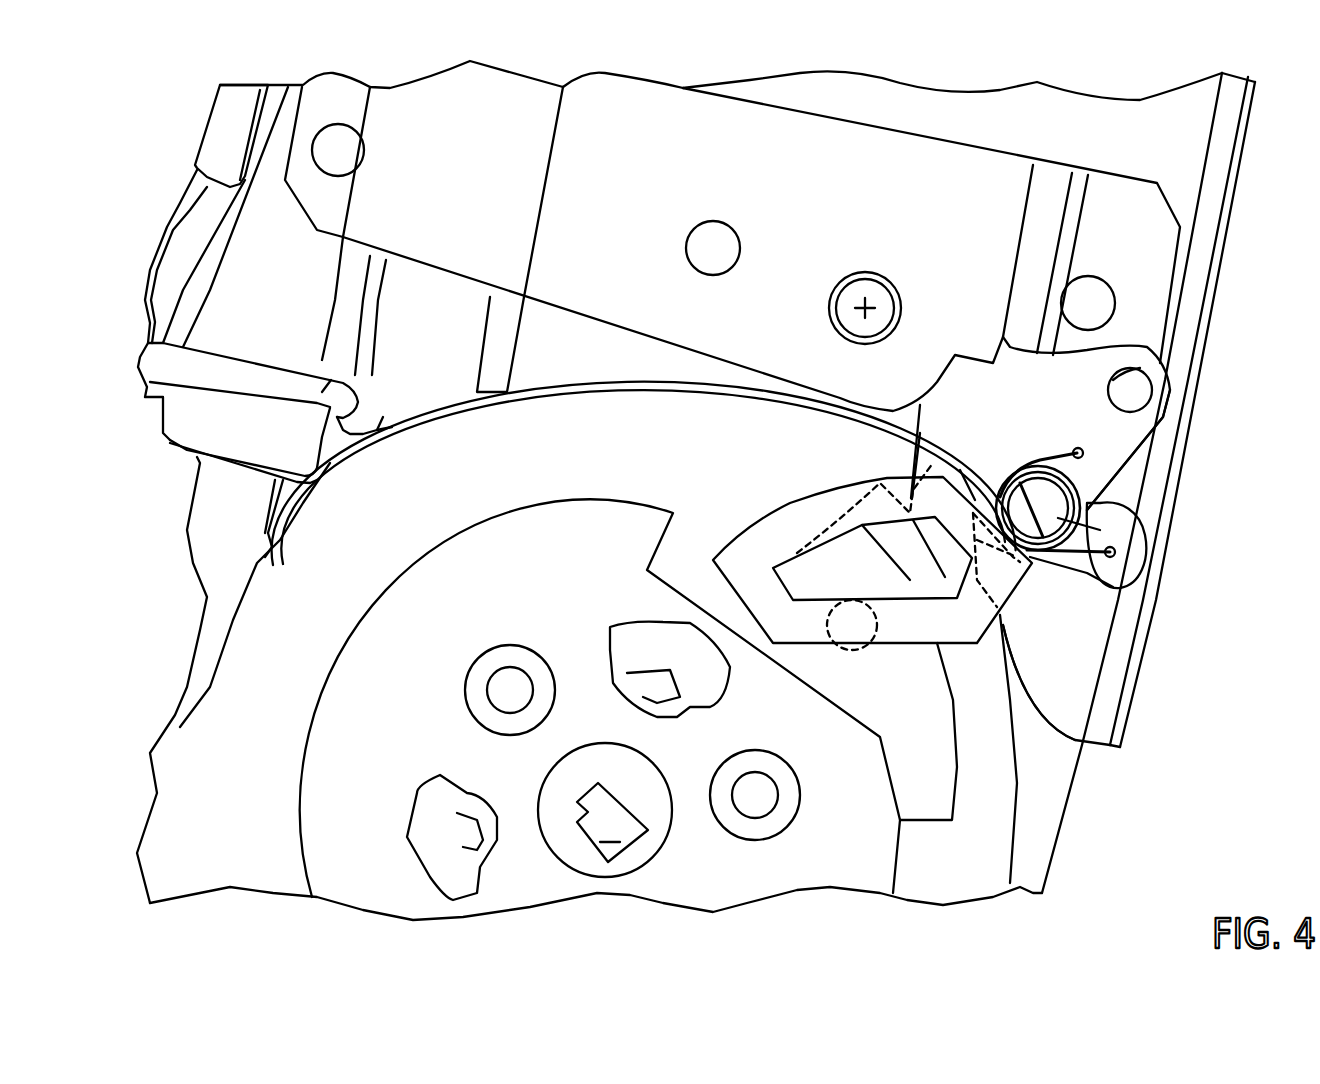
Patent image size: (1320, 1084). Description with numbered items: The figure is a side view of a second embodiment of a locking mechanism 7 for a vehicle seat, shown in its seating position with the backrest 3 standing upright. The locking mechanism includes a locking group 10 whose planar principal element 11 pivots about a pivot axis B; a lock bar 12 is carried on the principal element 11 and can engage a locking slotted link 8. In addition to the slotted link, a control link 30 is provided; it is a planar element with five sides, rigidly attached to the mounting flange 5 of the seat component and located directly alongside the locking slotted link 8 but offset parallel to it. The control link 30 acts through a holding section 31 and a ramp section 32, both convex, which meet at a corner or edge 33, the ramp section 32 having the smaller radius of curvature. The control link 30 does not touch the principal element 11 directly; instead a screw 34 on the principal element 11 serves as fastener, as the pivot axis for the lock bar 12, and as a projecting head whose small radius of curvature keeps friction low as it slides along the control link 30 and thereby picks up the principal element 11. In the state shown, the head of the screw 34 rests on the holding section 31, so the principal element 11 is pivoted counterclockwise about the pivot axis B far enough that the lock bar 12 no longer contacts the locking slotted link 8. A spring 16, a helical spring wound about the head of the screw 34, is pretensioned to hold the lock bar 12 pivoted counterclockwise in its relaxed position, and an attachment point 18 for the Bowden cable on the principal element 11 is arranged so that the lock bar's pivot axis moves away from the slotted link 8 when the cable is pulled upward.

The backrest 3 is at (263, 342).
The mounting flange 5 is at (240, 703).
The locking mechanism 7 is at (143, 172).
The locking slotted link 8 is at (930, 782).
The locking group 10 is at (1212, 520).
The principal element 11 is at (1132, 435).
The lock bar 12 is at (1133, 560).
The spring 16 is at (1048, 462).
The attachment point 18 is at (1135, 392).
The control link 30 is at (1020, 613).
The holding section 31 is at (968, 480).
The ramp section 32 is at (793, 497).
The corner or edge 33 is at (940, 467).
The screw 34 is at (1058, 518).
The pivot axis B is at (858, 310).